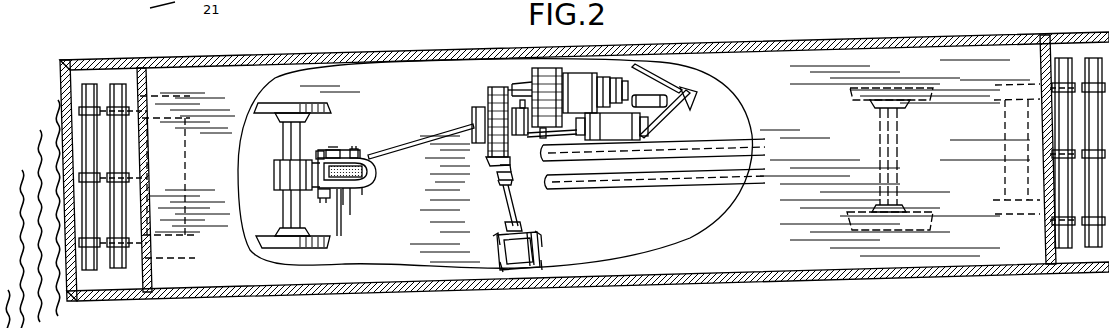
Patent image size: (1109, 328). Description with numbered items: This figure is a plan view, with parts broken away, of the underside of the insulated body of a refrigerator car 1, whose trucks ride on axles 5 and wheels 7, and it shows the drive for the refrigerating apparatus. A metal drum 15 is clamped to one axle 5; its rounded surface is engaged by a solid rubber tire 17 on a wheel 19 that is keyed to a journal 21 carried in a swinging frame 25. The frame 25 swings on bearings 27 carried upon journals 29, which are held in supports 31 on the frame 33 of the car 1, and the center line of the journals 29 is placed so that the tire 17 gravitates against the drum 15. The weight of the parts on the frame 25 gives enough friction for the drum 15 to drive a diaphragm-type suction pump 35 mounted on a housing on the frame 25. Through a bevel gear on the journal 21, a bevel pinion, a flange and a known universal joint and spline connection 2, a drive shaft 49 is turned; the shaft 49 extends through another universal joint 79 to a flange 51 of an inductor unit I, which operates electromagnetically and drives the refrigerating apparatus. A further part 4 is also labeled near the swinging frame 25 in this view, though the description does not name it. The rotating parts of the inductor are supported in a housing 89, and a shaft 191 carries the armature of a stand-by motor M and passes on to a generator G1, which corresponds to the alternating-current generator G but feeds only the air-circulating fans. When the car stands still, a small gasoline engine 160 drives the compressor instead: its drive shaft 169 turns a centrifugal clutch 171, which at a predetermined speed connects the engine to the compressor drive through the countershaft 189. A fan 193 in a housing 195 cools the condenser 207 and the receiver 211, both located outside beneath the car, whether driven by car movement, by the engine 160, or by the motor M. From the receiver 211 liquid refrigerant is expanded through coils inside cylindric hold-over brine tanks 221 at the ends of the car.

The insulated body of a refrigerator car 1 is at (795, 39).
The universal joint and spline connection 2 is at (375, 158).
The clamp 4 is at (376, 166).
The axle 5 is at (290, 140).
The wheel 7 is at (150, 108).
The metal drum 15 is at (275, 160).
The solid rubber tire 17 is at (364, 184).
The wheel 19 is at (346, 190).
The journal 21 is at (351, 216).
The swinging frame 25 is at (373, 178).
The bearing 27 is at (316, 163).
The journal 29 is at (336, 150).
The support 31 is at (320, 151).
The frame 33 is at (750, 148).
The diaphragm-type suction pump 35 is at (356, 150).
The drive shaft 49 is at (422, 138).
The flange 51 is at (474, 130).
The universal joint 79 is at (614, 140).
The housing 89 is at (494, 160).
The small gasoline engine 160 is at (538, 254).
The drive shaft 169 is at (516, 210).
The centrifugal clutch 171 is at (500, 178).
The countershaft 189 is at (548, 138).
The shaft 191 is at (530, 98).
The fan 193 is at (542, 68).
The housing 195 is at (535, 72).
The condenser 207 is at (692, 100).
The receiver 211 is at (652, 96).
The cylindric hold-over brine tank 221 is at (90, 203).
The alternating-current generator G is at (549, 150).
The generator G1 is at (616, 70).
The motor M is at (578, 64).
The inductor unit I is at (472, 159).